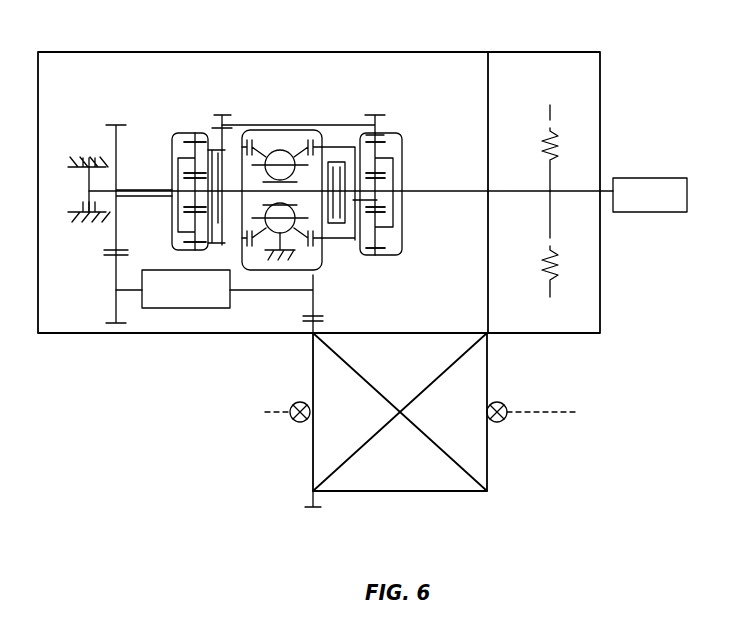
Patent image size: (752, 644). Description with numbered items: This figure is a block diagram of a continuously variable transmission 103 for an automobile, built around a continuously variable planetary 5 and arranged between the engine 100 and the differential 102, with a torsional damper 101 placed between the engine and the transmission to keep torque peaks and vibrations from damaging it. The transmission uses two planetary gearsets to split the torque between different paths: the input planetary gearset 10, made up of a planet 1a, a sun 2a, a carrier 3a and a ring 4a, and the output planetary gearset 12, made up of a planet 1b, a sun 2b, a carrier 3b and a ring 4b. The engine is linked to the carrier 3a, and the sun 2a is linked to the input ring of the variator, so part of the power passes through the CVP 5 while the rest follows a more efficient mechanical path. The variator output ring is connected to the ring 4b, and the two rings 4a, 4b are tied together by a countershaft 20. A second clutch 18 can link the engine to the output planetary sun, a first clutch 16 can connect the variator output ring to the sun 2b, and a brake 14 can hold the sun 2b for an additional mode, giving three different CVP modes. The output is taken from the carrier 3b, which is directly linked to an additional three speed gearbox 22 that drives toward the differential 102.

The continuously variable transmission 103 is at (279, 50).
The torsional damper 101 is at (538, 50).
The engine 100 is at (670, 176).
The differential 102 is at (343, 494).
The three speed gearbox 22 is at (219, 301).
The brake 14 is at (92, 157).
The output planetary gearset 12 is at (188, 127).
The input planetary gearset 10 is at (392, 132).
The countershaft 20 is at (292, 120).
The continuously variable planetary 5 is at (263, 280).
The first clutch 16 is at (236, 233).
The second clutch 18 is at (349, 232).
The ring 4b is at (172, 142).
The carrier 3b is at (180, 177).
The sun 2b is at (180, 204).
The planet 1b is at (180, 240).
The ring 4a is at (395, 140).
The carrier 3a is at (397, 174).
The sun 2a is at (395, 205).
The planet 1a is at (395, 240).